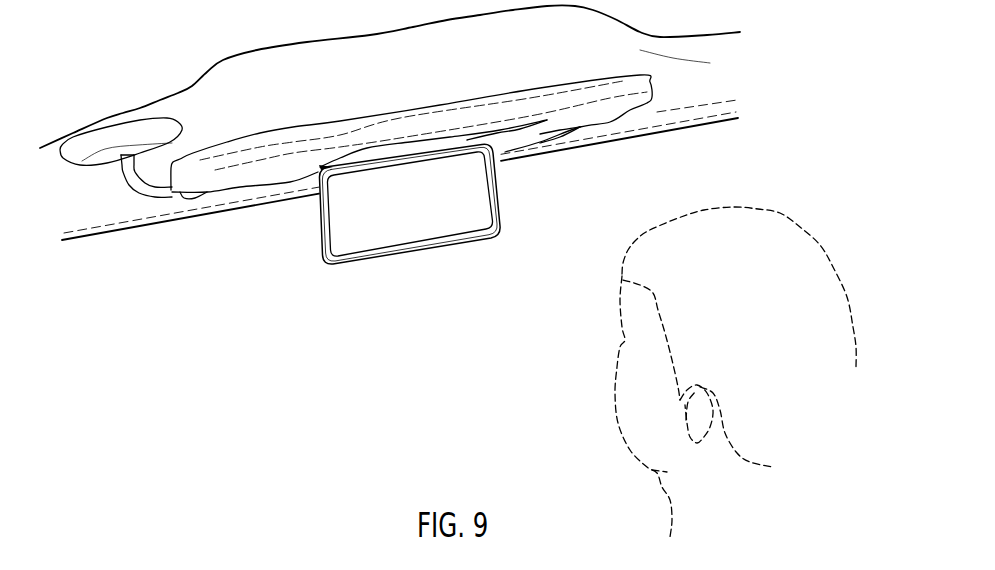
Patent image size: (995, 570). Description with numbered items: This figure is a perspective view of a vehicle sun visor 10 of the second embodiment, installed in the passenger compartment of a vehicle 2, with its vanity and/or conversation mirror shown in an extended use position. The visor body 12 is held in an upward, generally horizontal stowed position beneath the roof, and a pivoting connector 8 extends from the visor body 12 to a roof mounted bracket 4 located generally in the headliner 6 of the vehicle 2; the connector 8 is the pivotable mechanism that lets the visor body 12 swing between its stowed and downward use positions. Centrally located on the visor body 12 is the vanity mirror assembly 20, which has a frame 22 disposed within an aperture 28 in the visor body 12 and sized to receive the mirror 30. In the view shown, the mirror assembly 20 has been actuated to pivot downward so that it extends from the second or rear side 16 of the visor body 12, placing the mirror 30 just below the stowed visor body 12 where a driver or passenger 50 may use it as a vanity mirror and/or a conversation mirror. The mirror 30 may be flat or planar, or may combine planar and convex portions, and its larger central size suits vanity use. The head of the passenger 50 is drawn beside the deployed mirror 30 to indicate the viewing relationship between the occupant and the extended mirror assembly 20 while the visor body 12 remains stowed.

The vehicle 2 is at (88, 243).
The roof mounted bracket 4 is at (142, 130).
The headliner 6 is at (160, 208).
The pivoting connector 8 is at (133, 192).
The vehicle sun visor 10 is at (254, 82).
The visor body 12 is at (380, 104).
The second or rear side 16 is at (251, 180).
The vanity mirror assembly 20 is at (312, 278).
The frame 22 is at (345, 266).
The aperture 28 is at (458, 140).
The mirror 30 is at (472, 215).
The passenger 50 is at (762, 208).